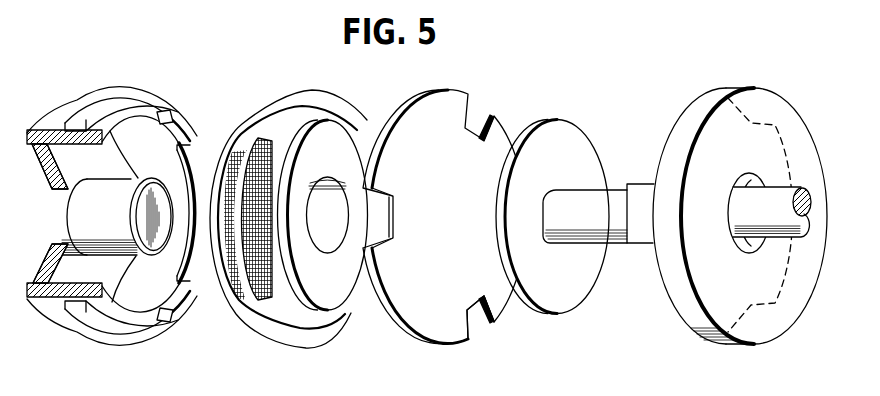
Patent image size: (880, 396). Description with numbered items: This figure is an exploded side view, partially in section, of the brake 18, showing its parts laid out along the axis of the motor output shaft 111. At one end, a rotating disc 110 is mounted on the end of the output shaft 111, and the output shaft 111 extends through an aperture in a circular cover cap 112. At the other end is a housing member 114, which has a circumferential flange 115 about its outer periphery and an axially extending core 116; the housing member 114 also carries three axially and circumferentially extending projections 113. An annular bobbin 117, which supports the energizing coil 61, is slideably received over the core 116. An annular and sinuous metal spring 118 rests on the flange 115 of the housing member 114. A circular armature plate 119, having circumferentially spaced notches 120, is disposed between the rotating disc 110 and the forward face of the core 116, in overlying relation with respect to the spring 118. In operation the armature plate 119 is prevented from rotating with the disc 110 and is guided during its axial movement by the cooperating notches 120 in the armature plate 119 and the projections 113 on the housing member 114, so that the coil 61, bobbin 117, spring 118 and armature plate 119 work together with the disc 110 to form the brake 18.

The brake 18 is at (717, 63).
The energizing coil 61 is at (270, 137).
The rotating disc 110 is at (553, 133).
The output shaft 111 is at (613, 197).
The cover cap 112 is at (695, 270).
The projections 113 is at (173, 111).
The housing member 114 is at (52, 308).
The circumferential flange 115 is at (132, 336).
The core 116 is at (139, 176).
The annular bobbin 117 is at (347, 293).
The sinuous metal spring 118 is at (281, 325).
The armature plate 119 is at (403, 128).
The notches 120 is at (475, 320).